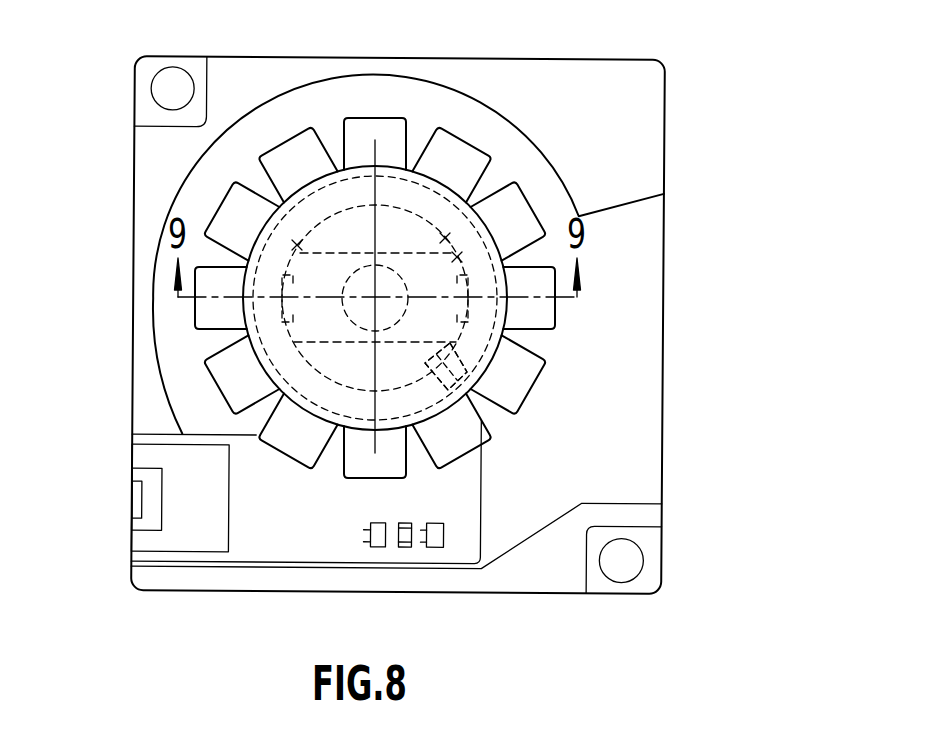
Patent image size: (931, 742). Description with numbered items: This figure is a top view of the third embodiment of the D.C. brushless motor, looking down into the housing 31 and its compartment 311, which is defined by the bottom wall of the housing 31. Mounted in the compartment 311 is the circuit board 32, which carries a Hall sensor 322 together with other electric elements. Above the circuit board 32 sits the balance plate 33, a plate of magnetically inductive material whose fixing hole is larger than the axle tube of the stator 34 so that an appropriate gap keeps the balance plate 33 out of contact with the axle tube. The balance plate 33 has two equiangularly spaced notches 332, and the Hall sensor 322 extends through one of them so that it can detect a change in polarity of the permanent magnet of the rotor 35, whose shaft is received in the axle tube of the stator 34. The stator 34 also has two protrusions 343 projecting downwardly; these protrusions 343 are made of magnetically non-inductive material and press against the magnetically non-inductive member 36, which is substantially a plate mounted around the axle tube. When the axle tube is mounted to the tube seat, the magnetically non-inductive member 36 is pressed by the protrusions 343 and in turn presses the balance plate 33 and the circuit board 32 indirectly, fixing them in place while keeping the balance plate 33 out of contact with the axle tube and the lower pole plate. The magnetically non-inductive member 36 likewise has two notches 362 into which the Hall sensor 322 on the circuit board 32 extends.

The housing 31 is at (132, 408).
The compartment 311 is at (498, 538).
The circuit board 32 is at (463, 553).
The Hall sensor 322 is at (372, 382).
The balance plate 33 is at (375, 242).
The notches 332 is at (300, 250).
The stator 34 is at (326, 218).
The rotor 35 is at (411, 170).
The magnetically non-inductive member 36 is at (455, 212).
The protrusions 343 is at (467, 340).
The notches 362 is at (467, 340).